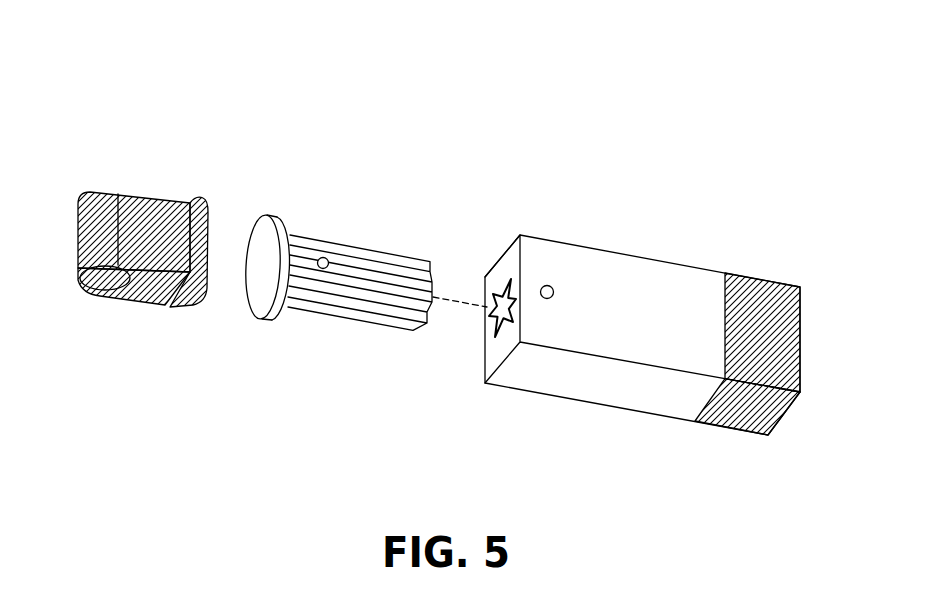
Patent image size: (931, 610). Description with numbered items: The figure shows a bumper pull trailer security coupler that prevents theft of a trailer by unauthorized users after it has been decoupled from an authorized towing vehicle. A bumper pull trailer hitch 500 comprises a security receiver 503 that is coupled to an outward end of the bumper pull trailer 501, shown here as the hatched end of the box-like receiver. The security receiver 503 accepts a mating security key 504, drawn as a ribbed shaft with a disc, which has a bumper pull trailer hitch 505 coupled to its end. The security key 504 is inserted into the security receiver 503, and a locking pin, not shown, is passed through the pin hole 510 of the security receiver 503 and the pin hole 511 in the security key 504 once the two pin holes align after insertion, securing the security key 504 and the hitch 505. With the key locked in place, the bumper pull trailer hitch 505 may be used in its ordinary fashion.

The bumper pull trailer hitch 500 is at (155, 54).
The bumper pull trailer 501 is at (779, 283).
The security receiver 503 is at (555, 240).
The security key 504 is at (305, 214).
The bumper pull trailer hitch 505 is at (133, 193).
The pin hole 510 is at (315, 447).
The pin hole 511 is at (326, 258).